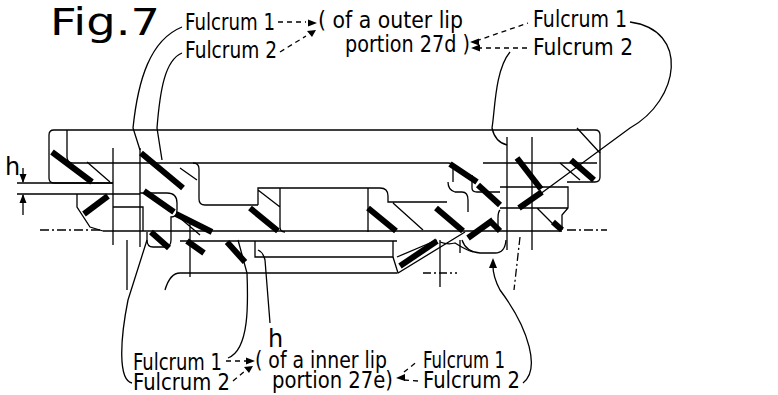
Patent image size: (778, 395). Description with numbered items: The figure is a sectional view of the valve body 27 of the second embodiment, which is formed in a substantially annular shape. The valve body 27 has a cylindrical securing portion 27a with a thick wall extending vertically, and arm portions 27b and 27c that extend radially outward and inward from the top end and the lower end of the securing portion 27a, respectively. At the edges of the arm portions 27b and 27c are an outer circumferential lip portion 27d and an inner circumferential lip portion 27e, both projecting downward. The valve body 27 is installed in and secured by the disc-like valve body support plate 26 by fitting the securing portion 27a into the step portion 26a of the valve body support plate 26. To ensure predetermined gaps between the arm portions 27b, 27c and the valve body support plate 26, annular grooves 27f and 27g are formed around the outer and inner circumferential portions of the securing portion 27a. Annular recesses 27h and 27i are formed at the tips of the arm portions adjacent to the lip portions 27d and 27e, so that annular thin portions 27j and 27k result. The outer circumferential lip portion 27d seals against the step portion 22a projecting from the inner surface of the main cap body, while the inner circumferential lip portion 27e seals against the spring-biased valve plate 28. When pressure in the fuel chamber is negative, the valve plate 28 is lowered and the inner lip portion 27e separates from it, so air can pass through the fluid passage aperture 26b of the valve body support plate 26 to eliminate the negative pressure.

The step portion 22a is at (598, 228).
The valve body support plate 26 is at (165, 170).
The step portion 26a is at (470, 162).
The fluid passage aperture 26b is at (318, 198).
The valve body 27 is at (500, 280).
The cylindrical securing portion 27a is at (173, 233).
The arm portion 27b is at (523, 145).
The arm portion 27c is at (200, 247).
The outer circumferential lip portion 27d is at (557, 240).
The inner circumferential lip portion 27e is at (430, 253).
The annular groove 27f is at (568, 148).
The annular groove 27g is at (423, 235).
The annular recess 27h is at (108, 243).
The annular recess 27i is at (447, 240).
The annular thin portion 27j is at (113, 150).
The annular thin portion 27k is at (218, 230).
The valve plate 28 is at (317, 267).